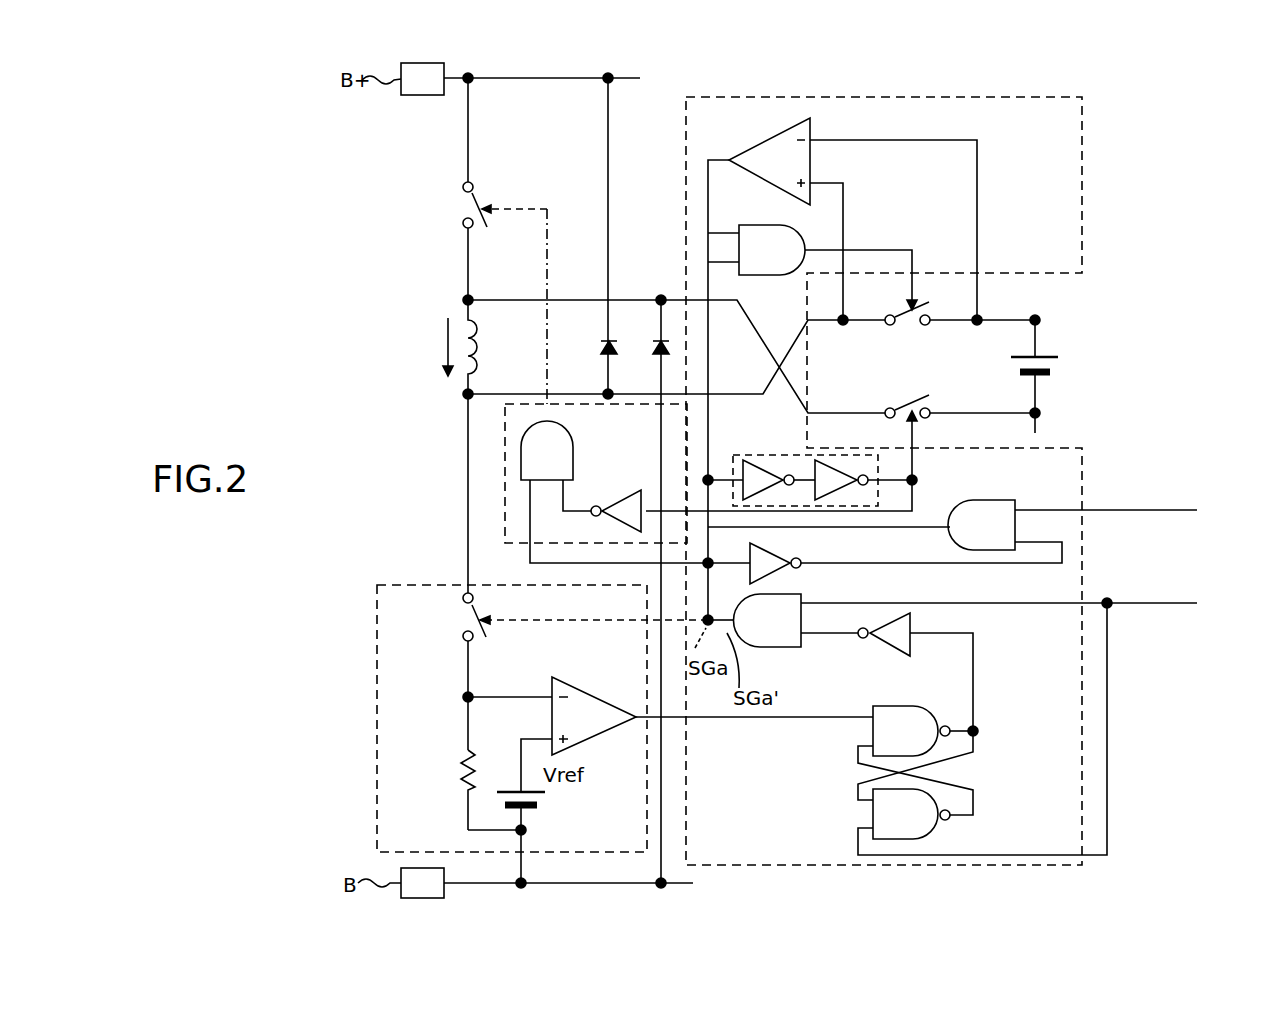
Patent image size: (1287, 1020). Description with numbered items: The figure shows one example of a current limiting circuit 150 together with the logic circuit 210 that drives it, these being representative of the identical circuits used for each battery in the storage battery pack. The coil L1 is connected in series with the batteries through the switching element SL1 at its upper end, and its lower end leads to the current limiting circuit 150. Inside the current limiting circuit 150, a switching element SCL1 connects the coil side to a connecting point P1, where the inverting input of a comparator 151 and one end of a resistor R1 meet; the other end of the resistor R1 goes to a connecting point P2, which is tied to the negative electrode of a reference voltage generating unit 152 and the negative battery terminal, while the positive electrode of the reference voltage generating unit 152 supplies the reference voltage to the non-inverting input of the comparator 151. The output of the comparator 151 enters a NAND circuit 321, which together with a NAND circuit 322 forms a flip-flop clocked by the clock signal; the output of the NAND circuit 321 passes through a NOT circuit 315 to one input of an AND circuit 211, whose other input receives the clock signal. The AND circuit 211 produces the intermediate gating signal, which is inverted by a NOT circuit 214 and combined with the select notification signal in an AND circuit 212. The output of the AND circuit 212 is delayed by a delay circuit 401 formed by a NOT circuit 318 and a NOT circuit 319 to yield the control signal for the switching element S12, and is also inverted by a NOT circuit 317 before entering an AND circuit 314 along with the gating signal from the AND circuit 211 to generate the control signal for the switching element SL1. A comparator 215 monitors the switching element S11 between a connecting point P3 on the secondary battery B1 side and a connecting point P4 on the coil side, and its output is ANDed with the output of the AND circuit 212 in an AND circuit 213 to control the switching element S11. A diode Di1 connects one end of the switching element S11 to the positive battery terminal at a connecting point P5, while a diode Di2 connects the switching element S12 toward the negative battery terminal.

The current limiting circuit 150 is at (377, 718).
The comparator 151 is at (609, 664).
The reference voltage generating unit 152 is at (540, 806).
The logic circuit 210 is at (1026, 97).
The AND circuit 211 is at (778, 594).
The AND circuit 212 is at (990, 499).
The AND circuit 213 is at (761, 225).
The NOT circuit 214 is at (780, 550).
The comparator 215 is at (767, 138).
The AND circuit 314 is at (574, 455).
The NOT circuit 315 is at (890, 652).
The NOT circuit 317 is at (627, 495).
The NOT circuit 318 is at (754, 462).
The NOT circuit 319 is at (815, 462).
The NAND circuit 321 is at (895, 707).
The NAND circuit 322 is at (930, 836).
The delay circuit 401 is at (840, 462).
The switching element SL1 is at (477, 196).
The switching element SCL1 is at (466, 614).
The switching element S11 is at (913, 318).
The switching element S12 is at (928, 404).
The coil L1 is at (480, 347).
The diode Di1 is at (603, 343).
The diode Di2 is at (655, 343).
The resistor R1 is at (451, 790).
The secondary battery B1 is at (1051, 374).
The connecting point P1 is at (461, 697).
The connecting point P2 is at (527, 830).
The connecting point P3 is at (983, 315).
The connecting point P4 is at (843, 326).
The connecting point P5 is at (614, 77).